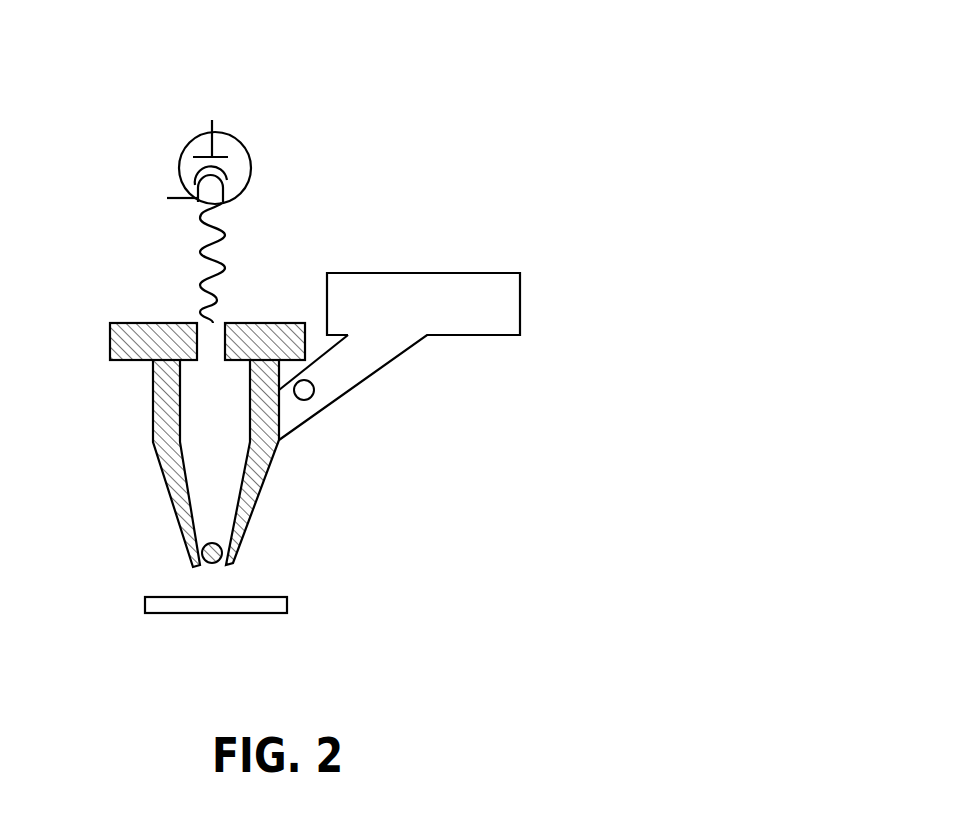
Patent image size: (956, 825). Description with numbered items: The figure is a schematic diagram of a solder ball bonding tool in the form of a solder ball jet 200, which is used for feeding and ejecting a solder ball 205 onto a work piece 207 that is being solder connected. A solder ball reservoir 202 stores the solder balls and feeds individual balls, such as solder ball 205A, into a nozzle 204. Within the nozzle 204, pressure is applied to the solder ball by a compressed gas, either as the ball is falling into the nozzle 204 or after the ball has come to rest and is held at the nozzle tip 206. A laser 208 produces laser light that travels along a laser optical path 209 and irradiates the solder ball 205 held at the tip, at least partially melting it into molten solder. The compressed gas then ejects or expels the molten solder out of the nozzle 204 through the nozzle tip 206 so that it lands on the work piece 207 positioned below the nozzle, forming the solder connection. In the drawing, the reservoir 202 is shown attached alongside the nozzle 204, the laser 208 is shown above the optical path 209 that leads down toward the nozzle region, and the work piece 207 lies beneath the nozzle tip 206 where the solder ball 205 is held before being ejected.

The solder ball jet 200 is at (521, 110).
The solder ball reservoir 202 is at (513, 302).
The nozzle 204 is at (258, 508).
The solder ball 205 is at (213, 567).
The solder ball 205A is at (314, 391).
The nozzle tip 206 is at (230, 565).
The work piece 207 is at (145, 603).
The laser 208 is at (245, 163).
The laser optical path 209 is at (208, 404).